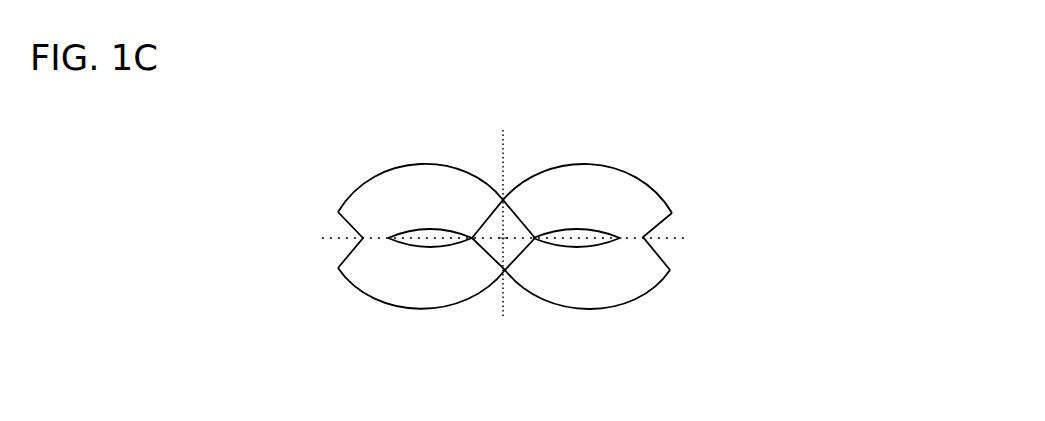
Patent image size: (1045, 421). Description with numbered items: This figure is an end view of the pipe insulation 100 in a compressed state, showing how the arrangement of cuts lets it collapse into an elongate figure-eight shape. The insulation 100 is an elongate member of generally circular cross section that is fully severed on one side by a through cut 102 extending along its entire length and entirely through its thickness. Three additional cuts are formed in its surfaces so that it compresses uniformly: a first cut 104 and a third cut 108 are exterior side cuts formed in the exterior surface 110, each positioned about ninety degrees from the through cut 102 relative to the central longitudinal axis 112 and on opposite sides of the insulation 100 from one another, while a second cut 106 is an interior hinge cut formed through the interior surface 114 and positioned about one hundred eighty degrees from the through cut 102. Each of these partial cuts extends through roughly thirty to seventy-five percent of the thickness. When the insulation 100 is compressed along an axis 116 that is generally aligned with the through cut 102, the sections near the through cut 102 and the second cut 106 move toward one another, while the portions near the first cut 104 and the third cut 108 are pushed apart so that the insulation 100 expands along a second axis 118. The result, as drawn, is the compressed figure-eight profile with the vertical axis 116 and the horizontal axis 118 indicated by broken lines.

The insulation 100 is at (691, 142).
The through cut 102 is at (487, 273).
The first cut 104 is at (315, 257).
The second cut 106 is at (518, 202).
The third cut 108 is at (681, 252).
The exterior surface 110 is at (638, 297).
The central longitudinal axis 112 is at (500, 238).
The interior surface 114 is at (400, 236).
The axis 116 is at (503, 130).
The second axis 118 is at (327, 237).